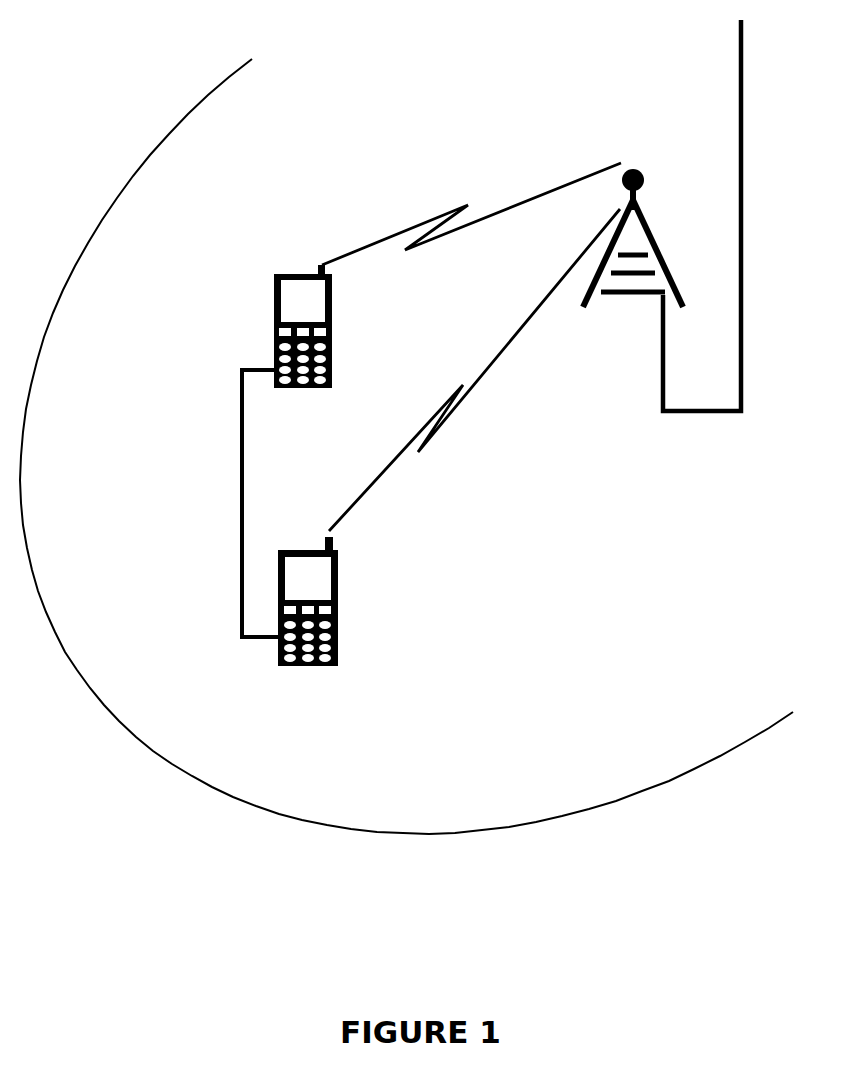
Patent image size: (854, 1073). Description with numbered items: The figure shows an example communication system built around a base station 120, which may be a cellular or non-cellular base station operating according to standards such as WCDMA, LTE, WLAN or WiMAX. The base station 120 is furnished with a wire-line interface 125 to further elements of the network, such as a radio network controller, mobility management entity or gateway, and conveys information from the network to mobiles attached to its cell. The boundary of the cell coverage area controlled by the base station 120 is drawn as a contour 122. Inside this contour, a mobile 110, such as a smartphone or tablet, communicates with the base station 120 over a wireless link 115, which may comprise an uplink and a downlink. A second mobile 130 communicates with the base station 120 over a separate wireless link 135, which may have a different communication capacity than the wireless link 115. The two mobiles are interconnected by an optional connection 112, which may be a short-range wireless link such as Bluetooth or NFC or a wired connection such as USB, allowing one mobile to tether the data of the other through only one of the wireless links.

The mobile 110 is at (303, 388).
The connection 112 is at (240, 524).
The wireless link 115 is at (497, 213).
The base station 120 is at (648, 297).
The contour 122 is at (735, 750).
The wire-line interface 125 is at (741, 114).
The mobile 130 is at (320, 668).
The wireless link 135 is at (463, 388).